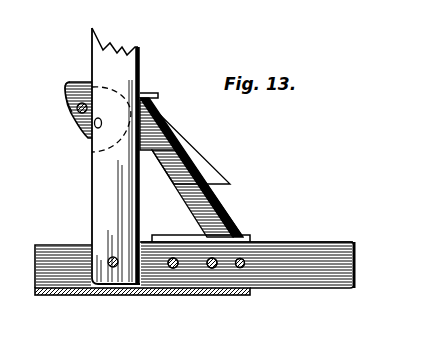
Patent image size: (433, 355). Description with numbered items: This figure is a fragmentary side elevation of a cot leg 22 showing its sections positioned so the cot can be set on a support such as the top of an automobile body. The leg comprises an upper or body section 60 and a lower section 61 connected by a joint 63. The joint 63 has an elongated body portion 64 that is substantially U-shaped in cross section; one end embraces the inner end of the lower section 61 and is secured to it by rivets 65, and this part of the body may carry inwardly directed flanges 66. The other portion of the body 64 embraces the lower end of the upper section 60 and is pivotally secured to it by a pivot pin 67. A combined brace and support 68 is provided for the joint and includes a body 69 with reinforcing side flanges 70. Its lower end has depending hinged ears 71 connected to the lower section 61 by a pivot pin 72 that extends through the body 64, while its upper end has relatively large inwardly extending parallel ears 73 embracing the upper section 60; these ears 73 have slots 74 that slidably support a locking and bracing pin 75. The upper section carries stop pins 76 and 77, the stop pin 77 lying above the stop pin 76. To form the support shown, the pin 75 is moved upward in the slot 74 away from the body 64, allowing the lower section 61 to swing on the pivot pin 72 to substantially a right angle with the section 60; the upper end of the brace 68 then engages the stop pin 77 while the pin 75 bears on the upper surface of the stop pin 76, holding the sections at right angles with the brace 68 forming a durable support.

The supporting leg 22 is at (131, 49).
The upper or body section 60 is at (122, 78).
The lower section 61 is at (318, 286).
The joint 63 is at (220, 192).
The elongated body portion 64 is at (170, 292).
The rivets 65 is at (358, 215).
The inwardly directed flanges 66 is at (228, 270).
The pivot pin 67 is at (113, 268).
The combined brace and support 68 is at (196, 167).
The body 69 is at (167, 130).
The reinforcing side flanges 70 is at (177, 160).
The depending hinged ears 71 is at (234, 237).
The pivot pin 72 is at (213, 268).
The inwardly extending parallel ears 73 is at (74, 82).
The slots 74 is at (68, 92).
The locking and bracing pin 75 is at (77, 108).
The stop pin 76 is at (90, 124).
The stop pin 77 is at (158, 96).